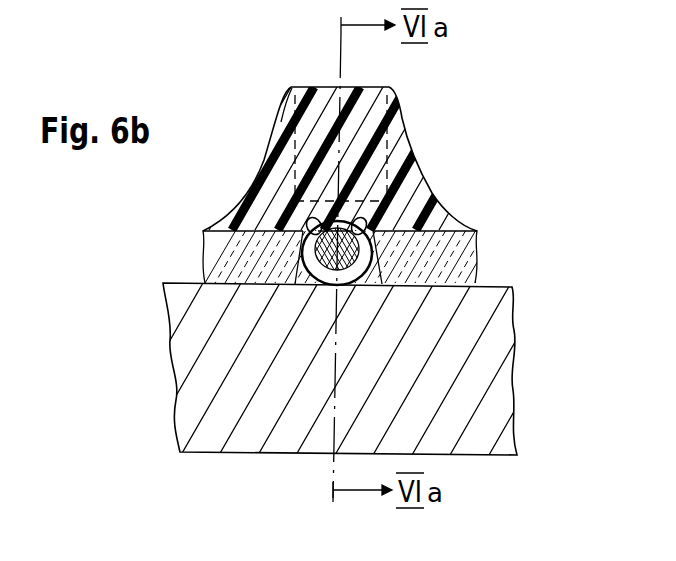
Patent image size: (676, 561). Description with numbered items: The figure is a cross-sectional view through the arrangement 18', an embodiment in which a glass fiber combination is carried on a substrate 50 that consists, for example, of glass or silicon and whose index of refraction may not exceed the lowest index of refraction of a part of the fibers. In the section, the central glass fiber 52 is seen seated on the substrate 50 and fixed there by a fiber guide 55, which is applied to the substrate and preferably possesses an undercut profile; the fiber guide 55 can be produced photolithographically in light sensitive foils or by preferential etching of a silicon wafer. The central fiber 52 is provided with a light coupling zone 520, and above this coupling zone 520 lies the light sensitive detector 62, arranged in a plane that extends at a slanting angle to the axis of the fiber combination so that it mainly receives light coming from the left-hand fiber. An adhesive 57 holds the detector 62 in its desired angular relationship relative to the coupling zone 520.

The substrate 50 is at (498, 345).
The fiber guide 55 is at (206, 234).
The arrangement 18' is at (307, 132).
The adhesive 57 is at (281, 141).
The light sensitive detector 62 is at (400, 103).
The central glass fiber 52 is at (362, 219).
The coupling zone 520 is at (342, 222).